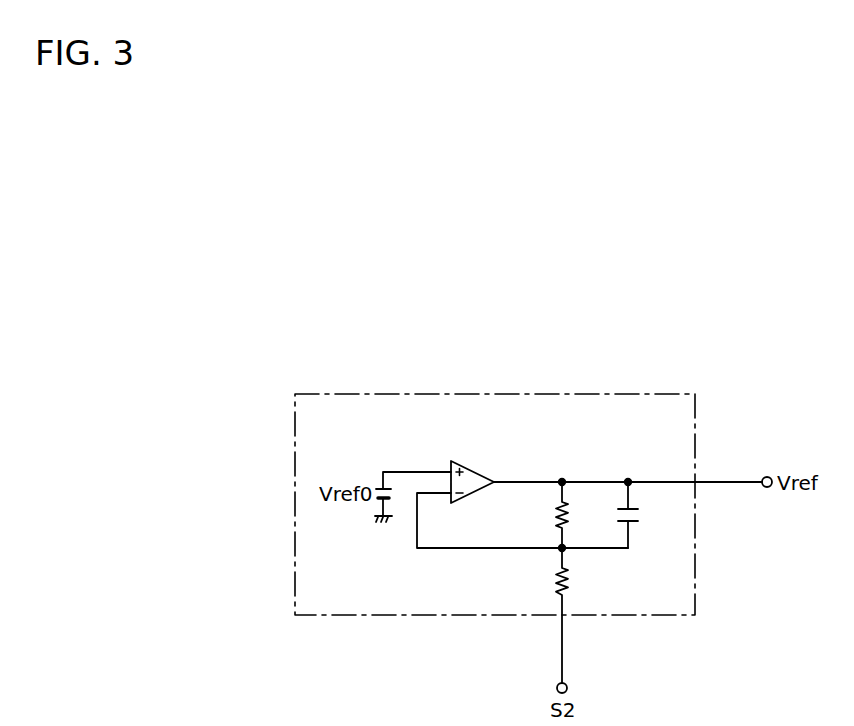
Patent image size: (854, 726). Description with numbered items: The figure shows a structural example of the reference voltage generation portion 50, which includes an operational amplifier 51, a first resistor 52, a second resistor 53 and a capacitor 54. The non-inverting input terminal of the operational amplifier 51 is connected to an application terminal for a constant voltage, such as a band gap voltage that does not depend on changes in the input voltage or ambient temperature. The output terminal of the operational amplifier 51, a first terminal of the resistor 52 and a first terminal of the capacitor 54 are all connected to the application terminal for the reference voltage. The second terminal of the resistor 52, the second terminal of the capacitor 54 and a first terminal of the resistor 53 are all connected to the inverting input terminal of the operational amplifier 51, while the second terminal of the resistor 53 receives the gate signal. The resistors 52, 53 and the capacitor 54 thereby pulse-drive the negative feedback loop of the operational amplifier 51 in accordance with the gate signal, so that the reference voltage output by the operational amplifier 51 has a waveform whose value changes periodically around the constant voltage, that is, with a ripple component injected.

The reference voltage generation portion 50 is at (494, 393).
The operational amplifier 51 is at (476, 471).
The resistor 52 is at (552, 517).
The resistor 53 is at (552, 584).
The capacitor 54 is at (639, 515).